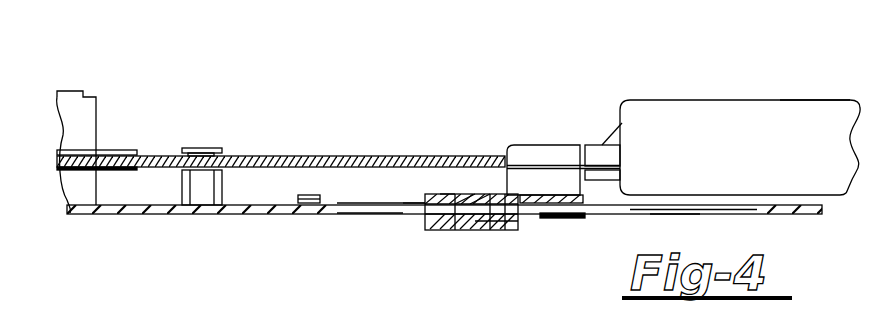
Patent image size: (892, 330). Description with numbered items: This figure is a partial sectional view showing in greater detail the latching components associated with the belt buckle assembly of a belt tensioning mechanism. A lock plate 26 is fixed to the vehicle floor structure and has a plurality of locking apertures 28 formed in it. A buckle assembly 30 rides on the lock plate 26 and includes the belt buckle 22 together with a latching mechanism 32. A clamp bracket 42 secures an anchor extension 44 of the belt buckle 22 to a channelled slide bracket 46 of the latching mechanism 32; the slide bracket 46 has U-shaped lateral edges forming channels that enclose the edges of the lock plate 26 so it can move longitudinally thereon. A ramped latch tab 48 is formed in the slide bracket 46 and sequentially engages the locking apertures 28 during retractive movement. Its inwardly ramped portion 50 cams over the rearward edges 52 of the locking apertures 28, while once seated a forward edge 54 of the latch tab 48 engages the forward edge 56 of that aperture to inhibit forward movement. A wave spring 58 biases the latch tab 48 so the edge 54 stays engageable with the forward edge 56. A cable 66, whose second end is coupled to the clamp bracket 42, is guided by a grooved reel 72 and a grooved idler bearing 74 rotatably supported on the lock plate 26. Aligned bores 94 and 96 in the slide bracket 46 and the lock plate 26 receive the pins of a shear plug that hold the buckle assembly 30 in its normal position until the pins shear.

The belt buckle 22 is at (680, 113).
The lock plate 26 is at (128, 220).
The locking apertures 28 is at (368, 204).
The buckle assembly 30 is at (817, 93).
The latching mechanism 32 is at (530, 236).
The clamp bracket 42 is at (523, 152).
The anchor extension 44 is at (548, 165).
The slide bracket 46 is at (433, 231).
The latch tab 48 is at (483, 231).
The inwardly ramped portion 50 is at (465, 231).
The rearward edges 52 is at (348, 213).
The forward edge 54 is at (508, 231).
The forward edge 56 is at (402, 211).
The wave spring 58 is at (455, 231).
The cable 66 is at (285, 153).
The grooved reel 72 is at (80, 123).
The grooved idler bearing 74 is at (202, 180).
The bores 94 is at (447, 193).
The bores 96 is at (665, 215).